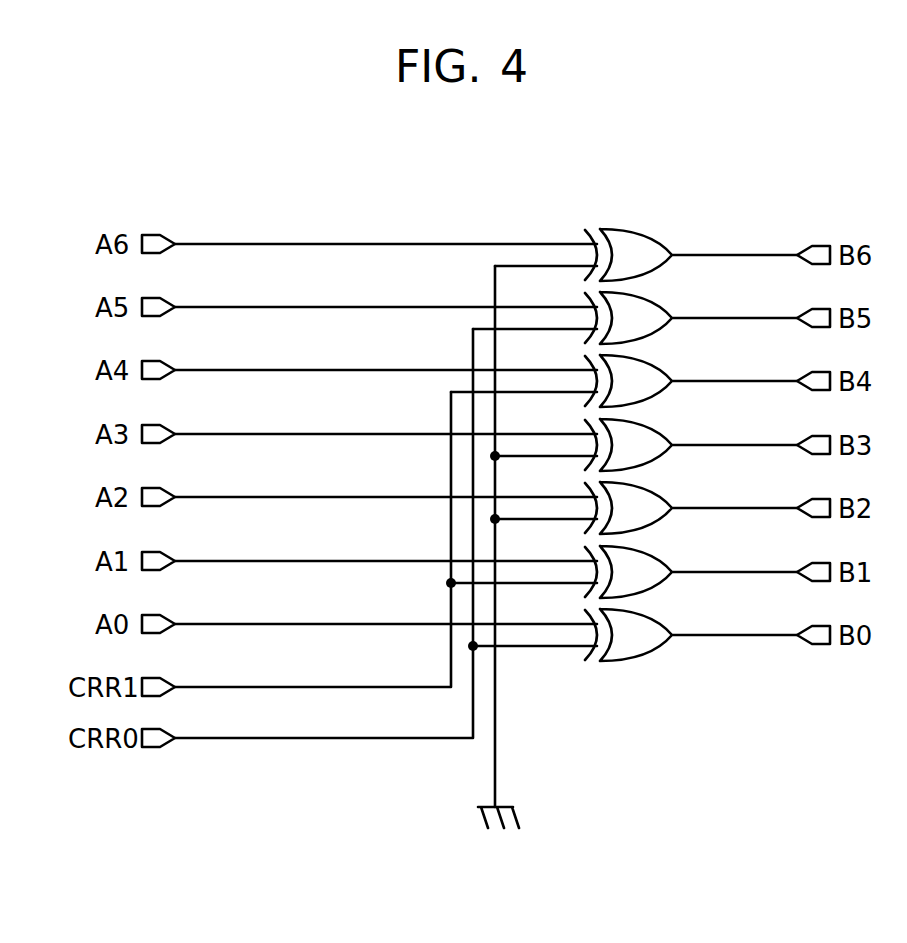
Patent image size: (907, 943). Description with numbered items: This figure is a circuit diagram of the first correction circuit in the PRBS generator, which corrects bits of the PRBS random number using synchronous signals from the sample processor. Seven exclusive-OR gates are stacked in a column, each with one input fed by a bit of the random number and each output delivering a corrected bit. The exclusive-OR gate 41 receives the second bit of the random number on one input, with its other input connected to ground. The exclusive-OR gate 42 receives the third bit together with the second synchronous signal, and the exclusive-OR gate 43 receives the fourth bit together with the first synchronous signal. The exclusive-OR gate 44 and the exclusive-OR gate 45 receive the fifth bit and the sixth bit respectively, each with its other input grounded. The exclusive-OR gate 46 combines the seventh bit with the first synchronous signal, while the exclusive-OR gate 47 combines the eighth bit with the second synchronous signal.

The exclusive-OR gate 41 is at (486, 255).
The exclusive-OR gate 42 is at (486, 318).
The exclusive-OR gate 43 is at (486, 381).
The exclusive-OR gate 44 is at (486, 445).
The exclusive-OR gate 45 is at (486, 508).
The exclusive-OR gate 46 is at (486, 572).
The exclusive-OR gate 47 is at (486, 635).